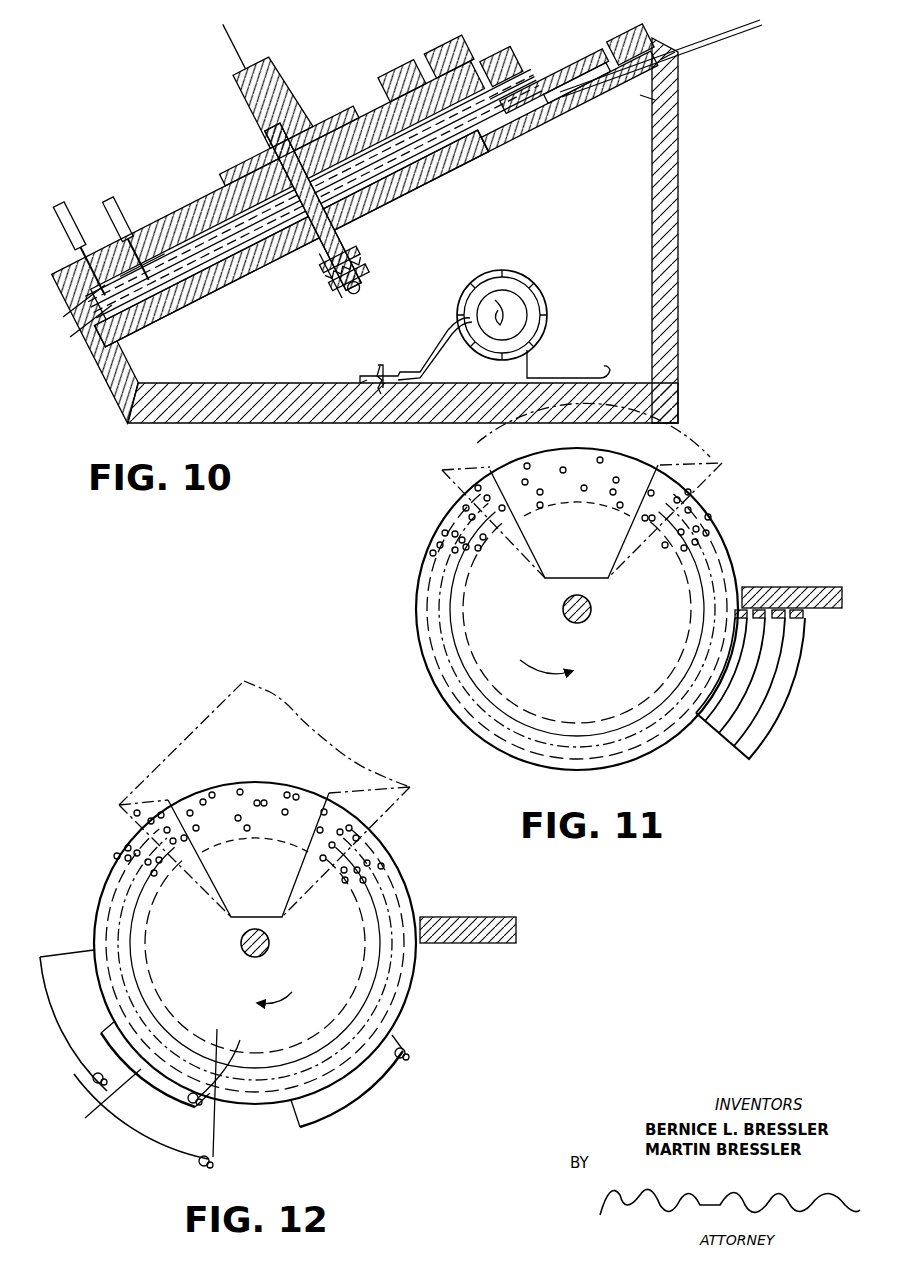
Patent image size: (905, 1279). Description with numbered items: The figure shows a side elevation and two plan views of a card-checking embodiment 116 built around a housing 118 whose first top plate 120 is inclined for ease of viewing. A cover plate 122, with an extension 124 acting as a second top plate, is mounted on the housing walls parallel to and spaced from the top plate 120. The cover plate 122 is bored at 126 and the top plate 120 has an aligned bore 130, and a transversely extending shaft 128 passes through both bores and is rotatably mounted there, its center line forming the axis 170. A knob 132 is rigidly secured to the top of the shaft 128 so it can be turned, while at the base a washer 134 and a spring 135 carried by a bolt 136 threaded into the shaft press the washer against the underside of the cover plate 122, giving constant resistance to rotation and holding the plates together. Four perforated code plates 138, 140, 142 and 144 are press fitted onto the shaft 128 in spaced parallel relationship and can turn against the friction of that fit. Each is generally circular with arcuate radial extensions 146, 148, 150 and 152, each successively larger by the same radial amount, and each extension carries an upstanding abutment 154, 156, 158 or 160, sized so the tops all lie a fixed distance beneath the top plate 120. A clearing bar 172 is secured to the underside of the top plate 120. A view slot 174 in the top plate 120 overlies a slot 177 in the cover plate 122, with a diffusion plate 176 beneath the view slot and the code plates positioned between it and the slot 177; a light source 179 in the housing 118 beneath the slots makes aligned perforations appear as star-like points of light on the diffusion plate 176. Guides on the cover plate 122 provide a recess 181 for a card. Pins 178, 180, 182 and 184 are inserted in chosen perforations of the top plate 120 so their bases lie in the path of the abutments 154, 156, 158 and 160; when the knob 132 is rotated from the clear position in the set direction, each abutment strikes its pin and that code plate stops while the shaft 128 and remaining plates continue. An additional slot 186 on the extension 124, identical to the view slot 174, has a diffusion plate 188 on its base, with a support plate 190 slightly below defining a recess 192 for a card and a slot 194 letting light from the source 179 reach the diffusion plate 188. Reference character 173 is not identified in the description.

In FIG. 10, the embodiment 116 is at (563, 72).
In FIG. 10, the housing 118 is at (678, 158).
In FIG. 10, the first top plate 120 is at (200, 197).
In FIG. 10, the cover plate 122 is at (553, 138).
In FIG. 10, the extension 124 is at (556, 100).
In FIG. 10, the bore 126 is at (398, 218).
In FIG. 10, the shaft 128 is at (330, 262).
In FIG. 10, the bore 130 is at (322, 175).
In FIG. 10, the knob 132 is at (245, 110).
In FIG. 10, the washer 134 is at (373, 240).
In FIG. 10, the spring 135 is at (374, 260).
In FIG. 10, the bolt 136 is at (358, 292).
In FIG. 10, the code plate 138 is at (235, 250).
In FIG. 11, the code plate 138 is at (662, 602).
In FIG. 12, the code plate 138 is at (333, 929).
In FIG. 10, the code plate 140 is at (255, 238).
In FIG. 10, the code plate 142 is at (350, 190).
In FIG. 10, the code plate 144 is at (375, 185).
In FIG. 11, the arcuate radial extension 146 is at (745, 655).
In FIG. 12, the arcuate radial extension 146 is at (132, 1105).
In FIG. 11, the arcuate radial extension 148 is at (758, 690).
In FIG. 12, the arcuate radial extension 148 is at (360, 1103).
In FIG. 11, the arcuate radial extension 150 is at (760, 720).
In FIG. 12, the arcuate radial extension 150 is at (72, 1070).
In FIG. 11, the arcuate radial extension 152 is at (752, 750).
In FIG. 12, the arcuate radial extension 152 is at (142, 1150).
In FIG. 10, the upstanding abutment 154 is at (190, 215).
In FIG. 11, the upstanding abutment 154 is at (741, 608).
In FIG. 12, the upstanding abutment 154 is at (240, 1044).
In FIG. 10, the upstanding abutment 156 is at (126, 236).
In FIG. 11, the upstanding abutment 156 is at (760, 608).
In FIG. 12, the upstanding abutment 156 is at (405, 1048).
In FIG. 10, the upstanding abutment 158 is at (63, 317).
In FIG. 11, the upstanding abutment 158 is at (779, 608).
In FIG. 12, the upstanding abutment 158 is at (85, 1118).
In FIG. 10, the upstanding abutment 160 is at (70, 337).
In FIG. 11, the upstanding abutment 160 is at (797, 608).
In FIG. 12, the upstanding abutment 160 is at (212, 1163).
In FIG. 10, the axis 170 is at (236, 46).
In FIG. 11, the clearing bar 172 is at (815, 612).
In FIG. 12, the clearing bar 172 is at (470, 917).
In FIG. 10, the spacer block 173 is at (478, 98).
In FIG. 10, the view slot 174 is at (405, 88).
In FIG. 10, the diffusion plate 176 is at (448, 90).
In FIG. 10, the slot 177 is at (478, 165).
In FIG. 10, the pin 178 is at (65, 200).
In FIG. 12, the pin 178 is at (200, 1165).
In FIG. 10, the light source 179 is at (520, 300).
In FIG. 12, the pin 180 is at (92, 1082).
In FIG. 10, the recess 181 is at (478, 120).
In FIG. 10, the pin 182 is at (115, 200).
In FIG. 12, the pin 182 is at (405, 1058).
In FIG. 12, the pin 184 is at (196, 1092).
In FIG. 10, the additional slot 186 is at (590, 80).
In FIG. 10, the diffusion plate 188 is at (626, 78).
In FIG. 10, the support plate 190 is at (548, 135).
In FIG. 10, the recess 192 is at (688, 65).
In FIG. 10, the slot 194 is at (662, 108).